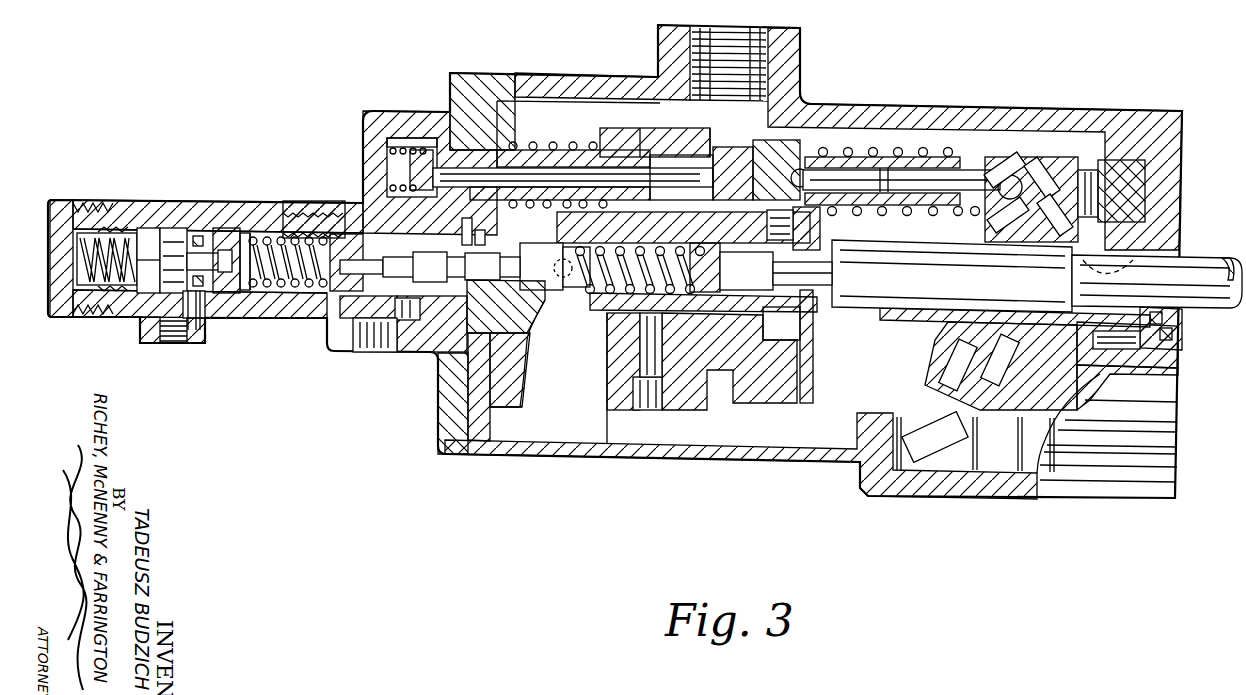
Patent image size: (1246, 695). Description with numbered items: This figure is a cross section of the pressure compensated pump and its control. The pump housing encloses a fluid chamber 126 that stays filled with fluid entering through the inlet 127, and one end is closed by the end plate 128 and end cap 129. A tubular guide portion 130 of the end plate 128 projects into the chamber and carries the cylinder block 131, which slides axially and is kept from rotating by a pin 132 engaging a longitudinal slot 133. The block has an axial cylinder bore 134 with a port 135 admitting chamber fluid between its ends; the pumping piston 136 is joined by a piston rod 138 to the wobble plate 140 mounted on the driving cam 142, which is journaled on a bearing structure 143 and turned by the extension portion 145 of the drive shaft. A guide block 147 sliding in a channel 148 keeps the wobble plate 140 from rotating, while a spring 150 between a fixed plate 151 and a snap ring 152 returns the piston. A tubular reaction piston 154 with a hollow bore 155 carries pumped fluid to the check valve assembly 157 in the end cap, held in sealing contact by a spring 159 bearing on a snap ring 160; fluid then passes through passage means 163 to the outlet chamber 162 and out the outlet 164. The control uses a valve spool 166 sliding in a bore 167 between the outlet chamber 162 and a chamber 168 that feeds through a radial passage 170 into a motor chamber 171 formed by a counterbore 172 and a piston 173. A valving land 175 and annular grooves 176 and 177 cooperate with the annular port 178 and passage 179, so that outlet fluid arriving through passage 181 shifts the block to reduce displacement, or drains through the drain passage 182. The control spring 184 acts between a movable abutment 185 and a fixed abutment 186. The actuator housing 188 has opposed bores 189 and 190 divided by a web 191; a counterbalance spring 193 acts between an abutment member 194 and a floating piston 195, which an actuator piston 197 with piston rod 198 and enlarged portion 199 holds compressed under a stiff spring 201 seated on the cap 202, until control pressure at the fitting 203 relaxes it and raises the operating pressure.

The fluid chamber 126 is at (903, 357).
The inlet 127 is at (741, 40).
The end plate 128 is at (520, 398).
The end cap 129 is at (444, 407).
The tubular guide portion 130 is at (667, 226).
The cylinder block 131 is at (658, 137).
The pin 132 is at (607, 386).
The longitudinal slot 133 is at (616, 343).
The axial cylinder bore 134 is at (682, 152).
The port 135 is at (712, 172).
The pumping piston 136 is at (785, 167).
The piston rod 138 is at (947, 172).
The wobble plate 140 is at (1040, 167).
The driving cam 142 is at (1033, 308).
The bearing structure 143 is at (1135, 190).
The extension portion of drive shaft 145 is at (1192, 302).
The projecting guide block 147 is at (916, 408).
The channel 148 is at (984, 467).
The spring 150 is at (893, 147).
The fixed plate 151 is at (812, 366).
The snap ring 152 is at (952, 216).
The tubular reaction piston 154 is at (608, 146).
The hollow bore 155 is at (660, 173).
The check valve assembly 157 is at (431, 139).
The spring 159 is at (583, 147).
The snap ring 160 is at (527, 145).
The outlet chamber 162 is at (354, 238).
The passage means 163 is at (410, 215).
The outlet 164 is at (354, 358).
The valve spool 166 is at (392, 278).
The bore 167 is at (395, 262).
The chamber 168 is at (592, 245).
The radial passage 170 is at (678, 318).
The motor chamber 171 is at (717, 334).
The counterbore 172 is at (785, 337).
The piston 173 is at (810, 222).
The valving land 175 is at (462, 323).
The annular groove 176 is at (452, 229).
The annular groove 177 is at (478, 244).
The annular port 178 is at (476, 290).
The passage 179 is at (540, 237).
The passage 181 is at (400, 300).
The drain passage 182 is at (545, 344).
The control spring 184 is at (583, 298).
The movable abutment 185 is at (560, 324).
The fixed abutment 186 is at (670, 232).
The housing 188 is at (146, 204).
The bore 189 is at (233, 228).
The bore 190 is at (177, 230).
The web 191 is at (207, 320).
The counterbalance spring 193 is at (288, 298).
The abutment member 194 is at (326, 233).
The floating piston 195 is at (243, 236).
The actuator piston 197 is at (146, 280).
The piston rod 198 is at (234, 306).
The enlarged portion 199 is at (166, 252).
The stiff spring 201 is at (112, 214).
The cap 202 is at (60, 316).
The fitting 203 is at (166, 341).